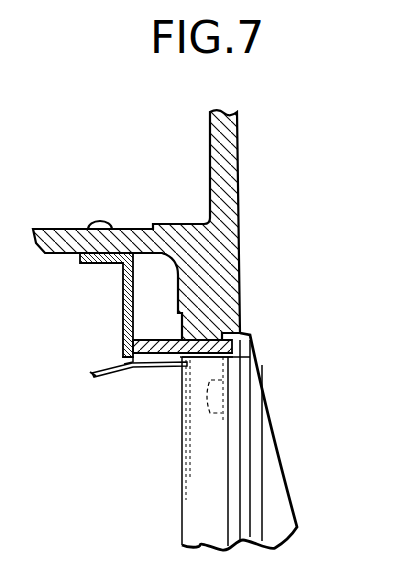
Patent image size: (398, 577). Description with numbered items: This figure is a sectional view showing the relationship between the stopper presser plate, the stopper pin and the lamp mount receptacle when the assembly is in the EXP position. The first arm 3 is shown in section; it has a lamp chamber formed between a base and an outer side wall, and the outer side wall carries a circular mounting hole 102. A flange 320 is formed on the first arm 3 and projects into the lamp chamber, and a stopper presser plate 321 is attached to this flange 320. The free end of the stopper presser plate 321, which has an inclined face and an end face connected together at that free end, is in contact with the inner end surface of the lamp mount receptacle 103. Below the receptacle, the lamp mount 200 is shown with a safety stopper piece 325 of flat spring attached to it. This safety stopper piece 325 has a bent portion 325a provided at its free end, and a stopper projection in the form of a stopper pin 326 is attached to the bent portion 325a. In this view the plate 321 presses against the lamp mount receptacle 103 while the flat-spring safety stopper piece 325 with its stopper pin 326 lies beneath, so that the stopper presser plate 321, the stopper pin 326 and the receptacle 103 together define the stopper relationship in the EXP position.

The first arm 3 is at (236, 156).
The flange 320 is at (135, 224).
The stopper presser plate 321 is at (122, 292).
The lamp mount receptacle 103 is at (128, 335).
The circular mounting hole 102 is at (223, 350).
The safety stopper piece 325 is at (158, 368).
The bent portion 325a is at (102, 375).
The stopper pin 326 is at (120, 357).
The lamp mount 200 is at (217, 483).